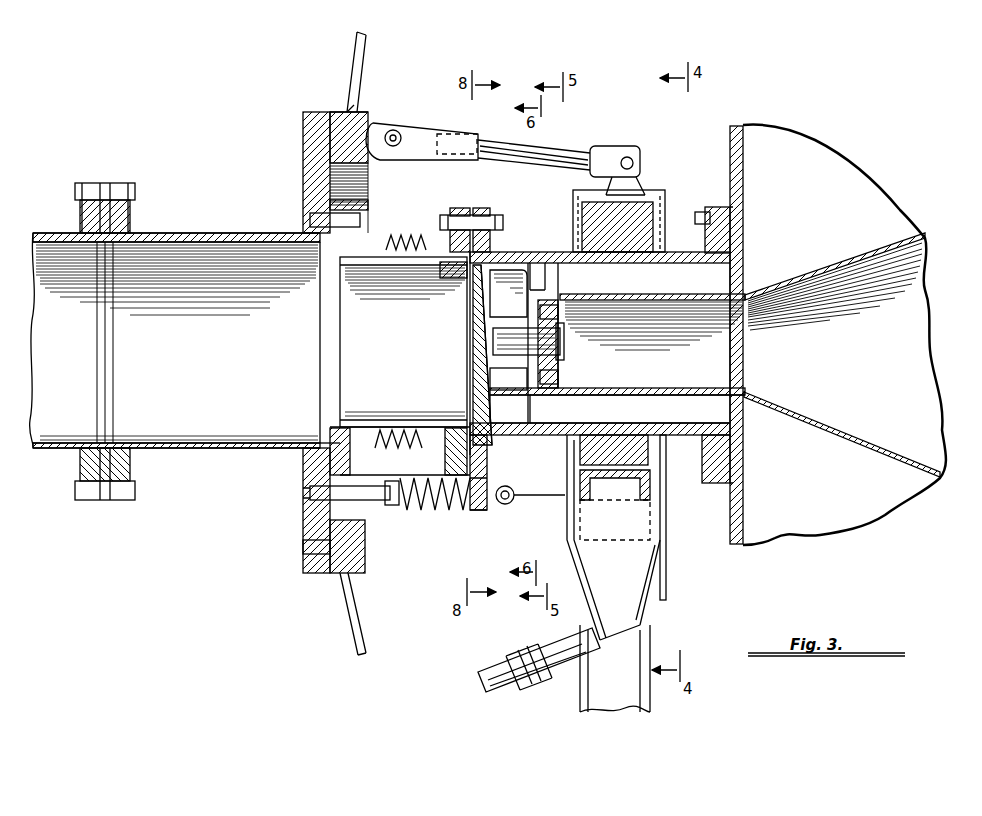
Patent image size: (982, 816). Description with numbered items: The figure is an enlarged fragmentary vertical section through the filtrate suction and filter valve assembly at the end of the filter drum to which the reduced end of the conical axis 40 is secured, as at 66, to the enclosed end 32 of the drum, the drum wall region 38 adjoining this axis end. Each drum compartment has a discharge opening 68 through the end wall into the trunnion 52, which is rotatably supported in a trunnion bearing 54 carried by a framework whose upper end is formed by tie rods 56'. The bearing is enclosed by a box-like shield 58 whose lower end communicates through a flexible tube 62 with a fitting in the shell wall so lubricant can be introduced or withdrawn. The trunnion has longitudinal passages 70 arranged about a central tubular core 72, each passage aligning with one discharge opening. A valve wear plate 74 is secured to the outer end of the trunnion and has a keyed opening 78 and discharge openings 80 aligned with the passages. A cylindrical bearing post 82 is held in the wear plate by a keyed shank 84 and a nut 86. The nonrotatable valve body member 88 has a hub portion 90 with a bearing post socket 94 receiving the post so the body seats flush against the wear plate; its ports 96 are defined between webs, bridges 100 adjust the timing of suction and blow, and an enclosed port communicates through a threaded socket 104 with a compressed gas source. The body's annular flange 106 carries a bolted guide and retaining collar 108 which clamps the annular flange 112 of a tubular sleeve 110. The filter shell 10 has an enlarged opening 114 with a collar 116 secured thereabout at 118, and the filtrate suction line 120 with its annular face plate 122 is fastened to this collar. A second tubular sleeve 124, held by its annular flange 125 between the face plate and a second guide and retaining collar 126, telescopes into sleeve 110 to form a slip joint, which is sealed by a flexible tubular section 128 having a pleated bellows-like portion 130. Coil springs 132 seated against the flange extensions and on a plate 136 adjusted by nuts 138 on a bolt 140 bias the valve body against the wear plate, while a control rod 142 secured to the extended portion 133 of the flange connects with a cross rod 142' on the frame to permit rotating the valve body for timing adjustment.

The filter shell 10 is at (366, 56).
The enclosed end of the drum 32 is at (745, 517).
The conical wall 38 is at (810, 282).
The conical axis 40 is at (858, 432).
The trunnion 52 is at (672, 452).
The trunnion bearing 54 is at (650, 220).
The tie rods 56' is at (505, 155).
The shield or housing 58 is at (656, 582).
The flexible tube 62 is at (495, 669).
The weld securing the conical axis 66 is at (745, 298).
The discharge opening 68 is at (745, 270).
The longitudinal passages 70 is at (640, 300).
The central tubular core 72 is at (662, 300).
The valve wear plate 74 is at (552, 436).
The keyed opening 78 is at (578, 320).
The discharge openings 80 is at (560, 284).
The cylindrical bearing post 82 is at (508, 379).
The keyed shank 84 is at (566, 362).
The nut 86 is at (590, 348).
The nonrotatable valve body member 88 is at (505, 256).
The hub portion 90 is at (478, 320).
The cylindrical bearing post socket 94 is at (487, 342).
The ports 96 is at (508, 293).
The valve adjusting shutters or bridges 100 is at (545, 417).
The threaded socket 104 is at (505, 437).
The annular flange 106 is at (488, 214).
The circular guide and retaining collar 108 is at (455, 212).
The tubular sleeve 110 is at (380, 272).
The annular flange 112 is at (455, 274).
The enlarged opening 114 is at (348, 110).
The collar 116 is at (368, 120).
The securement of the collar 118 is at (357, 112).
The filtrate suction line 120 is at (178, 232).
The annular face plate 122 is at (304, 160).
The second tubular sleeve 124 is at (376, 248).
The annular flange 125 is at (318, 432).
The second guide and retaining collar 126 is at (308, 282).
The flexible tubular section 128 is at (380, 442).
The pleated bellows-like portion 130 is at (425, 442).
The coil springs 132 is at (435, 502).
The extended portion of the valve body flange 133 is at (482, 503).
The plate 136 is at (368, 547).
The nuts 138 is at (393, 512).
The bolt 140 is at (346, 498).
The control rod 142 is at (530, 513).
The cross rod 142' is at (611, 505).